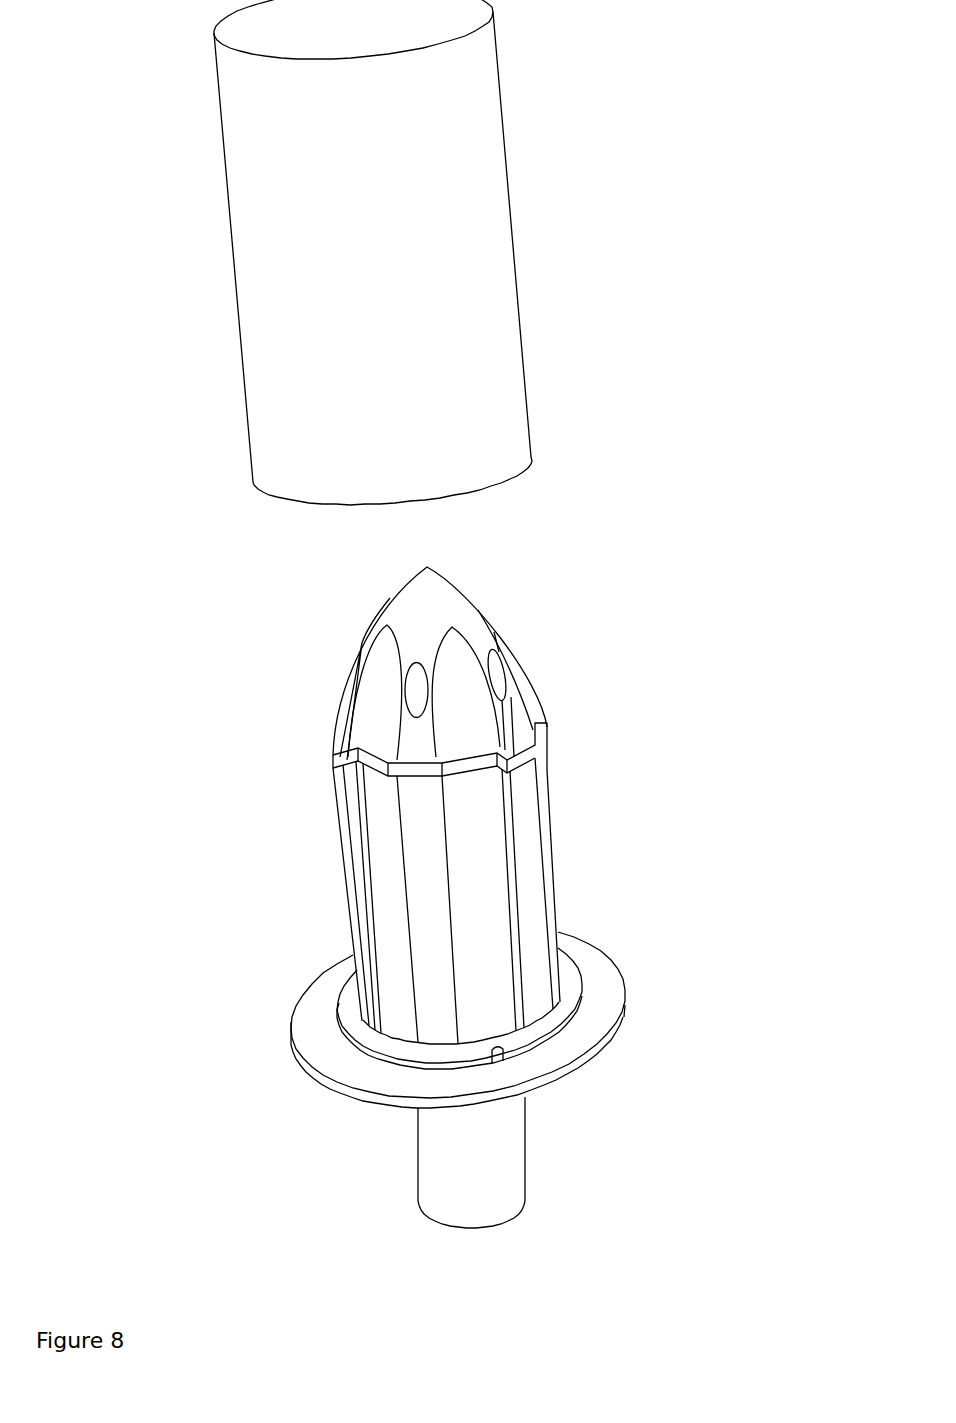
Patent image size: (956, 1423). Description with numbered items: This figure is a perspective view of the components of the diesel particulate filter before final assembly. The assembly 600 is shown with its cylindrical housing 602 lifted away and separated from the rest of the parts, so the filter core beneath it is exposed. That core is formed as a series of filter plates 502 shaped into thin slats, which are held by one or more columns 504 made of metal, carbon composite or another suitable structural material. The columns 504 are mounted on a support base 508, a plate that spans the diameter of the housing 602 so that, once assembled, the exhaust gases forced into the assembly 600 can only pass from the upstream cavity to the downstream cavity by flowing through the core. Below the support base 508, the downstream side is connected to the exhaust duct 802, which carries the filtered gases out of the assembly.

The assembly 600 is at (655, 422).
The cylindrical housing 602 is at (468, 303).
The filter plates 502 is at (484, 838).
The columns 504 is at (404, 805).
The support base 508 is at (585, 1032).
The exhaust duct 802 is at (490, 1152).